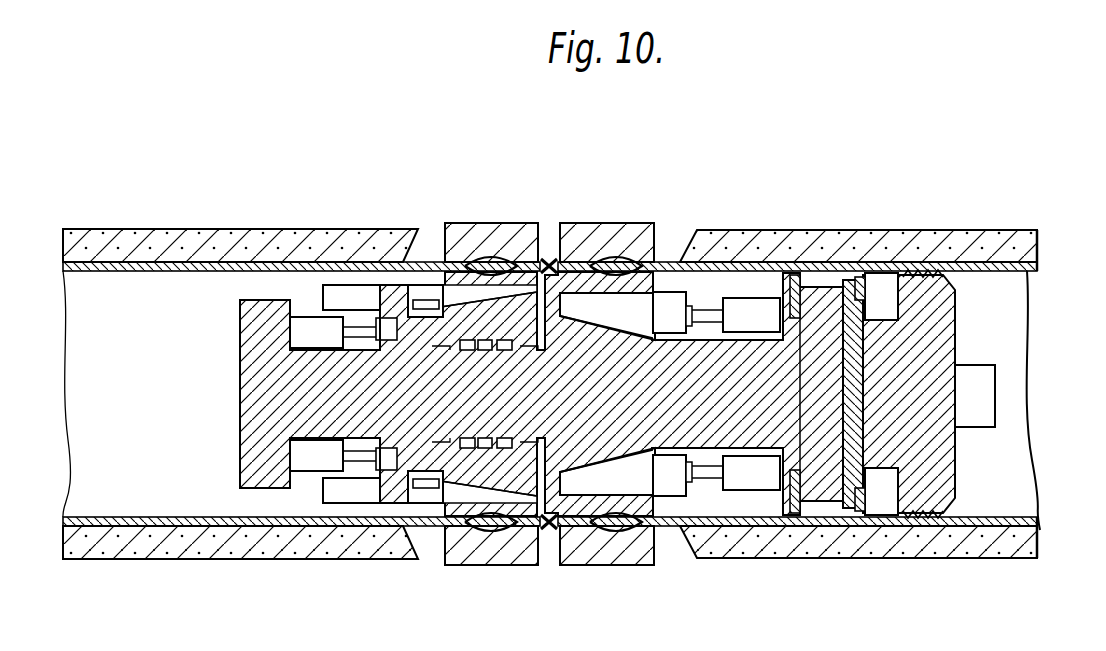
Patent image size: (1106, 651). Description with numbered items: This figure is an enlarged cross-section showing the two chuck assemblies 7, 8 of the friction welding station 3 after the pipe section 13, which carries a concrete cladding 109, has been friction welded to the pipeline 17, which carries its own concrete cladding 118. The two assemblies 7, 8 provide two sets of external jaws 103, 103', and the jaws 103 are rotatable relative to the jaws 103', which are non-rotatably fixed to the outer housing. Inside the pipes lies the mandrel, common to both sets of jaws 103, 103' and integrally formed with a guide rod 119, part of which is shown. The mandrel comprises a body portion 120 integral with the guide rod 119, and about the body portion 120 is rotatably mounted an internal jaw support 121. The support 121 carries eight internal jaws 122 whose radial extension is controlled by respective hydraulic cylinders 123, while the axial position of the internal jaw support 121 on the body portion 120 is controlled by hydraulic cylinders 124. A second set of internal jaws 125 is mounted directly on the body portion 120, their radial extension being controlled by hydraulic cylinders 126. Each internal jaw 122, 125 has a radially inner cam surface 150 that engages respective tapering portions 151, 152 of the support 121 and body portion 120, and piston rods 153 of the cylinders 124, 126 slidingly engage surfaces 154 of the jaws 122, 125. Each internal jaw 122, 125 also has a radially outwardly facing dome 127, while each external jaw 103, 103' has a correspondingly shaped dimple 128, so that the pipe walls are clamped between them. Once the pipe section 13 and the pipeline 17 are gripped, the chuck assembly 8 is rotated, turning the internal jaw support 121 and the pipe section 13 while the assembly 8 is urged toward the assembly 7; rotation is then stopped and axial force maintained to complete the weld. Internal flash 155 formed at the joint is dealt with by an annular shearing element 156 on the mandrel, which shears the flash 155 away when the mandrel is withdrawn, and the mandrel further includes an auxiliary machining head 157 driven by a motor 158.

The friction welding station 3 is at (672, 128).
The first chuck assembly 7 is at (618, 128).
The second chuck assembly 8 is at (431, 90).
The pipe section 13 is at (105, 268).
The pipeline 17 is at (1013, 270).
The external jaws 103 is at (496, 188).
The external jaws 103' is at (634, 183).
The concrete cladding 109 is at (118, 241).
The concrete cladding 118 is at (1010, 250).
The guide rod 119 is at (247, 335).
The body portion 120 is at (600, 387).
The internal jaw support 121 is at (393, 300).
The internal jaws 122 is at (437, 298).
The hydraulic cylinders 123 is at (345, 297).
The hydraulic cylinders 124 is at (305, 328).
The internal jaws 125 is at (687, 305).
The hydraulic cylinders 126 is at (776, 320).
The dome 127 is at (520, 260).
The dimple 128 is at (509, 253).
The cam surface 150 is at (476, 298).
The tapering portion 151 is at (470, 298).
The tapering portion 152 is at (972, 323).
The piston rods 153 is at (398, 290).
The surfaces 154 is at (428, 296).
The internal flash 155 is at (546, 528).
The annular shearing element 156 is at (953, 509).
The auxiliary machining head 157 is at (896, 248).
The motor 158 is at (990, 408).